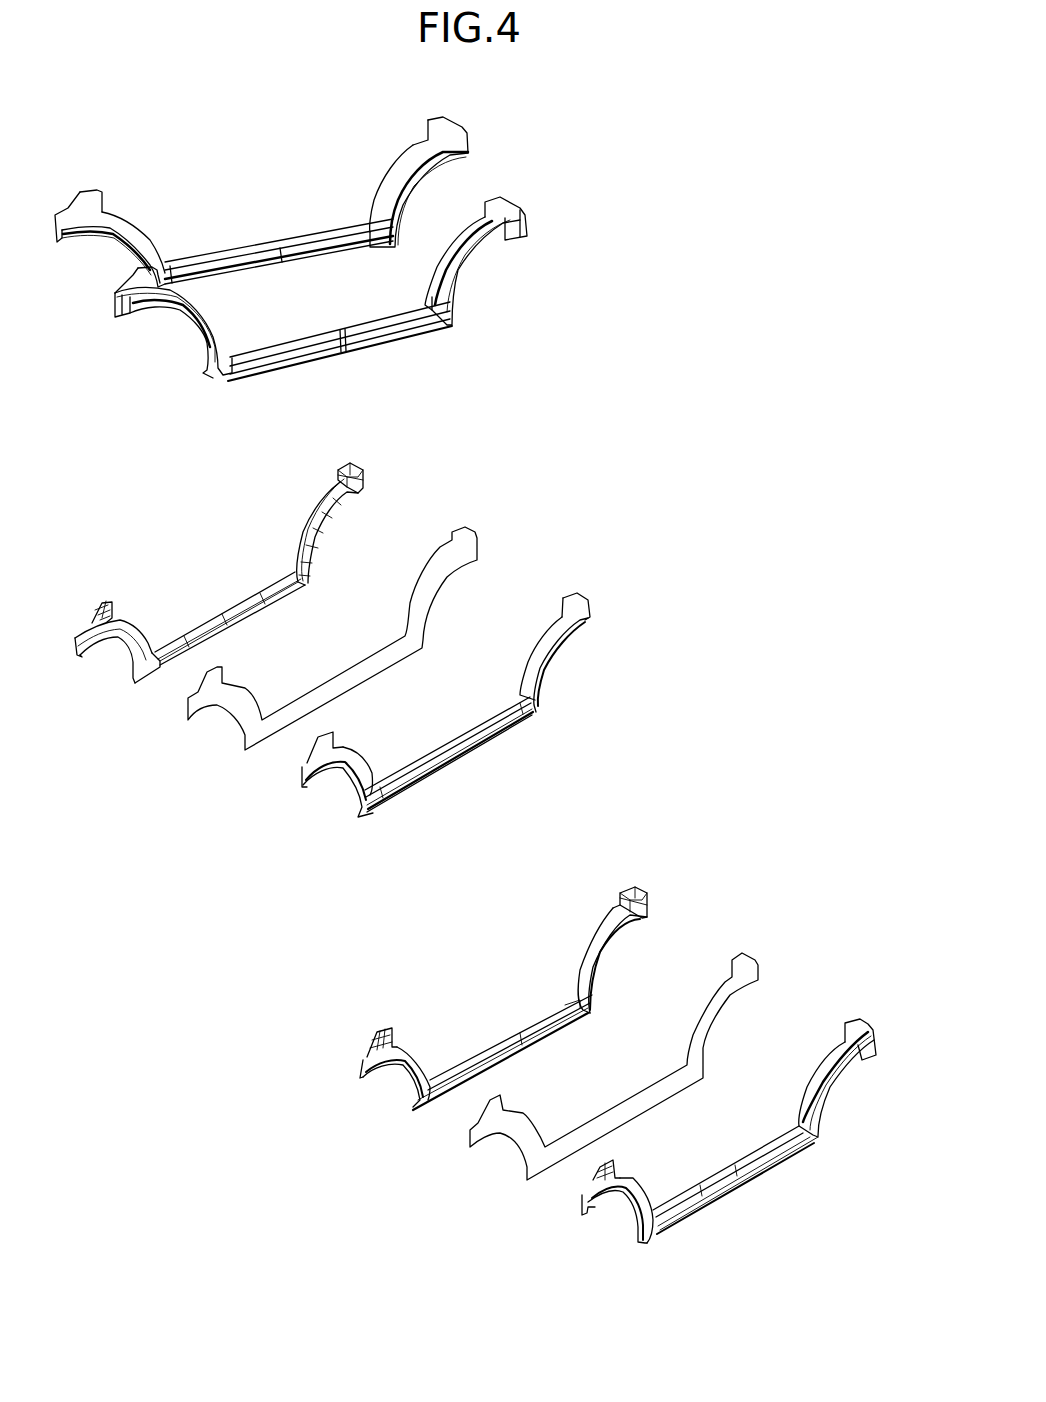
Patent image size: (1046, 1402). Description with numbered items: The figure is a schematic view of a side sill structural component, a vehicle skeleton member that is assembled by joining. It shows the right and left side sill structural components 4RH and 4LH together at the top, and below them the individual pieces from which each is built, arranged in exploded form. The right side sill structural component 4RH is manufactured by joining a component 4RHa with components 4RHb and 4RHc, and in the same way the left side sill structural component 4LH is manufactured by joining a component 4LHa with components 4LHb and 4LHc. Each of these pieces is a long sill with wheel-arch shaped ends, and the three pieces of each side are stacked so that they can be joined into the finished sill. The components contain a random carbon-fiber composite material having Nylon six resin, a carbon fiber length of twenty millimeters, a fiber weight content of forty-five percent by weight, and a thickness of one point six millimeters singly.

The right side sill structural component 4RH is at (468, 140).
The left side sill structural component 4LH is at (452, 327).
The component 4RHa is at (363, 473).
The component 4RHb is at (467, 538).
The component 4RHc is at (590, 617).
The component 4LHa is at (582, 1207).
The component 4LHb is at (470, 1130).
The component 4LHc is at (360, 1062).